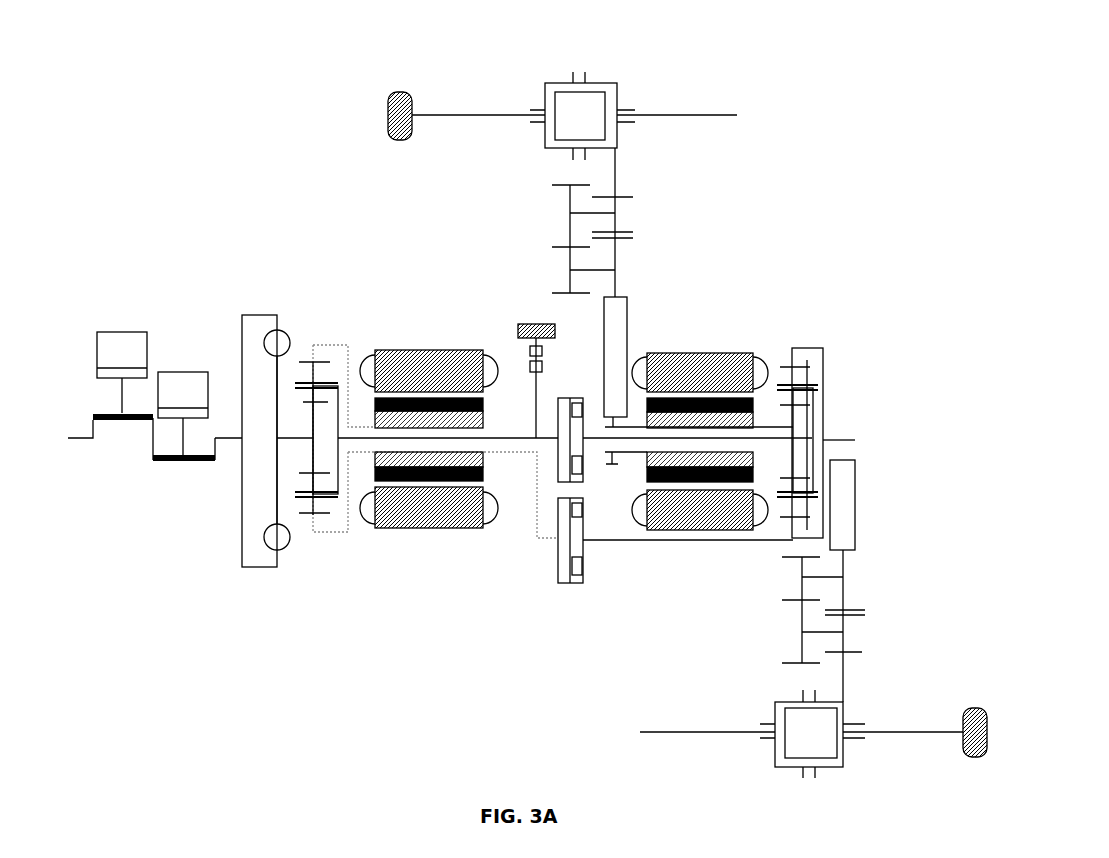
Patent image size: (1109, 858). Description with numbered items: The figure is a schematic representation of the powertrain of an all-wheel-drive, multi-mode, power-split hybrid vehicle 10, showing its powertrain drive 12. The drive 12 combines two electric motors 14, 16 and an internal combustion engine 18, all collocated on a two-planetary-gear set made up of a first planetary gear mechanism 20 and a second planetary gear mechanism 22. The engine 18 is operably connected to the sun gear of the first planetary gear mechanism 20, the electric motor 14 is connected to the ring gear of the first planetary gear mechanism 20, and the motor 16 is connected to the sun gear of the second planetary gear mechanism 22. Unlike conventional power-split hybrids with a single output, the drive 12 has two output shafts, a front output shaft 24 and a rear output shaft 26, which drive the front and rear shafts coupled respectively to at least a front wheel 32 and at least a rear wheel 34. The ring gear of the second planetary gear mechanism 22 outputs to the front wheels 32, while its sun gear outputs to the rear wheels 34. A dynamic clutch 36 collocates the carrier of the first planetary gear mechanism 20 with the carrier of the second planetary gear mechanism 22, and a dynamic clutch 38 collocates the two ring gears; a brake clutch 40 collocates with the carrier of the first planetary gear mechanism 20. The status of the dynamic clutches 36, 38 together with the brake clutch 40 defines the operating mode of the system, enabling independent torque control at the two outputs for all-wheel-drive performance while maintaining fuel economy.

The hybrid vehicle 10 is at (158, 80).
The powertrain drive 12 is at (318, 175).
The electric motor 14 is at (430, 348).
The electric motor 16 is at (697, 350).
The internal combustion engine 18 is at (192, 302).
The first planetary gear mechanism 20 is at (354, 330).
The second planetary gear mechanism 22 is at (816, 332).
The front output shaft 24 is at (757, 623).
The rear output shaft 26 is at (652, 228).
The front wheel 32 is at (978, 695).
The rear wheel 34 is at (390, 82).
The dynamic clutch 36 is at (573, 386).
The dynamic clutch 38 is at (573, 612).
The brake clutch 40 is at (537, 305).